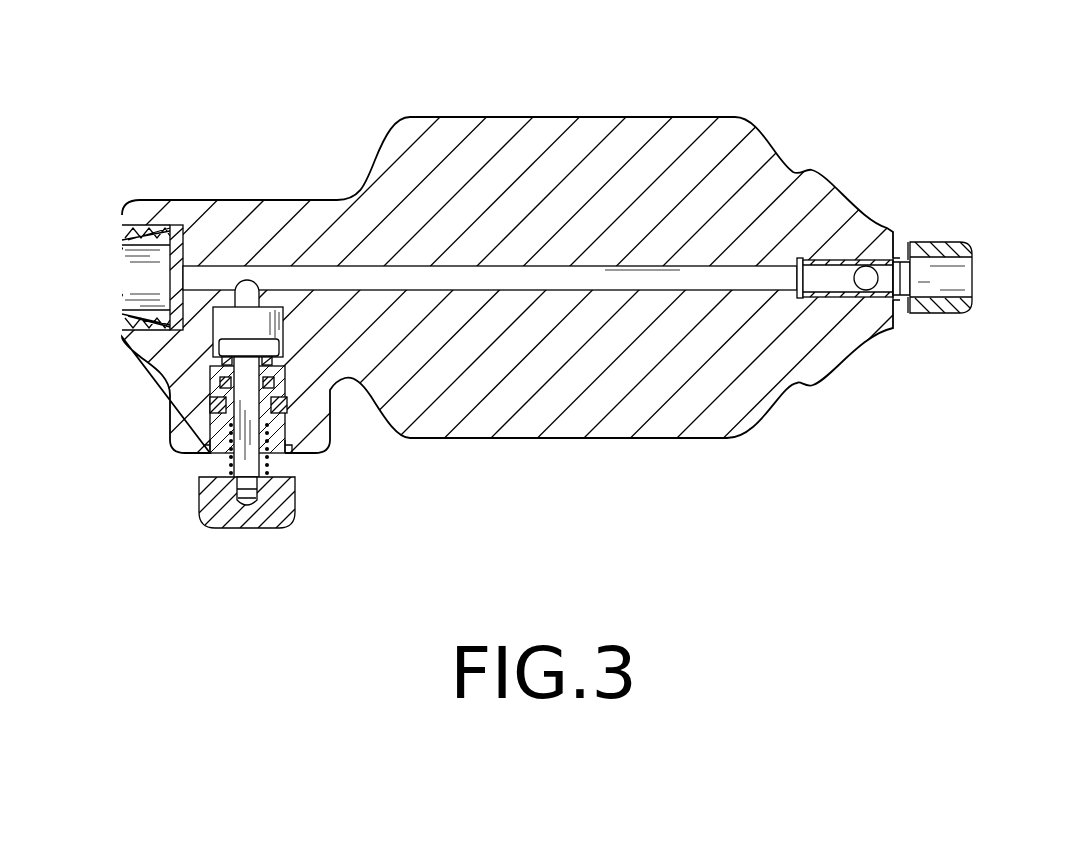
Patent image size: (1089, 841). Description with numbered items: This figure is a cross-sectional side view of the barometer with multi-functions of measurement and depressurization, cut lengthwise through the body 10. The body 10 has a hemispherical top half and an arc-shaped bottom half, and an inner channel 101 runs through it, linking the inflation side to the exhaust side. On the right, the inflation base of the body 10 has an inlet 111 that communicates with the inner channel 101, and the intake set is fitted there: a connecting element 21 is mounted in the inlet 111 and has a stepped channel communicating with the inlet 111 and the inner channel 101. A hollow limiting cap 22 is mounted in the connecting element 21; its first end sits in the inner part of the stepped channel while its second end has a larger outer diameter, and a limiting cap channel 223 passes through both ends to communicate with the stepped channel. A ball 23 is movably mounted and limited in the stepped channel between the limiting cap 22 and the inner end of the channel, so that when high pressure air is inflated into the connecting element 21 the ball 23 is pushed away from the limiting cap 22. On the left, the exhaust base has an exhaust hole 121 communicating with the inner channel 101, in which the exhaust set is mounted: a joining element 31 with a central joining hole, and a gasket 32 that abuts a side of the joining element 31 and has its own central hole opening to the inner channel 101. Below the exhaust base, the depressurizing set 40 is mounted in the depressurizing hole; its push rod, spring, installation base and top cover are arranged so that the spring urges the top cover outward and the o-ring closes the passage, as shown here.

The body 10 is at (620, 440).
The inner channel 101 is at (590, 268).
The inlet 111 is at (893, 255).
The exhaust hole 121 is at (150, 243).
The joining element 31 is at (130, 314).
The gasket 32 is at (178, 233).
The connecting element 21 is at (965, 310).
The limiting cap 22 is at (900, 300).
The limiting cap channel 223 is at (905, 280).
The ball 23 is at (866, 285).
The depressurizing set 40 is at (183, 519).